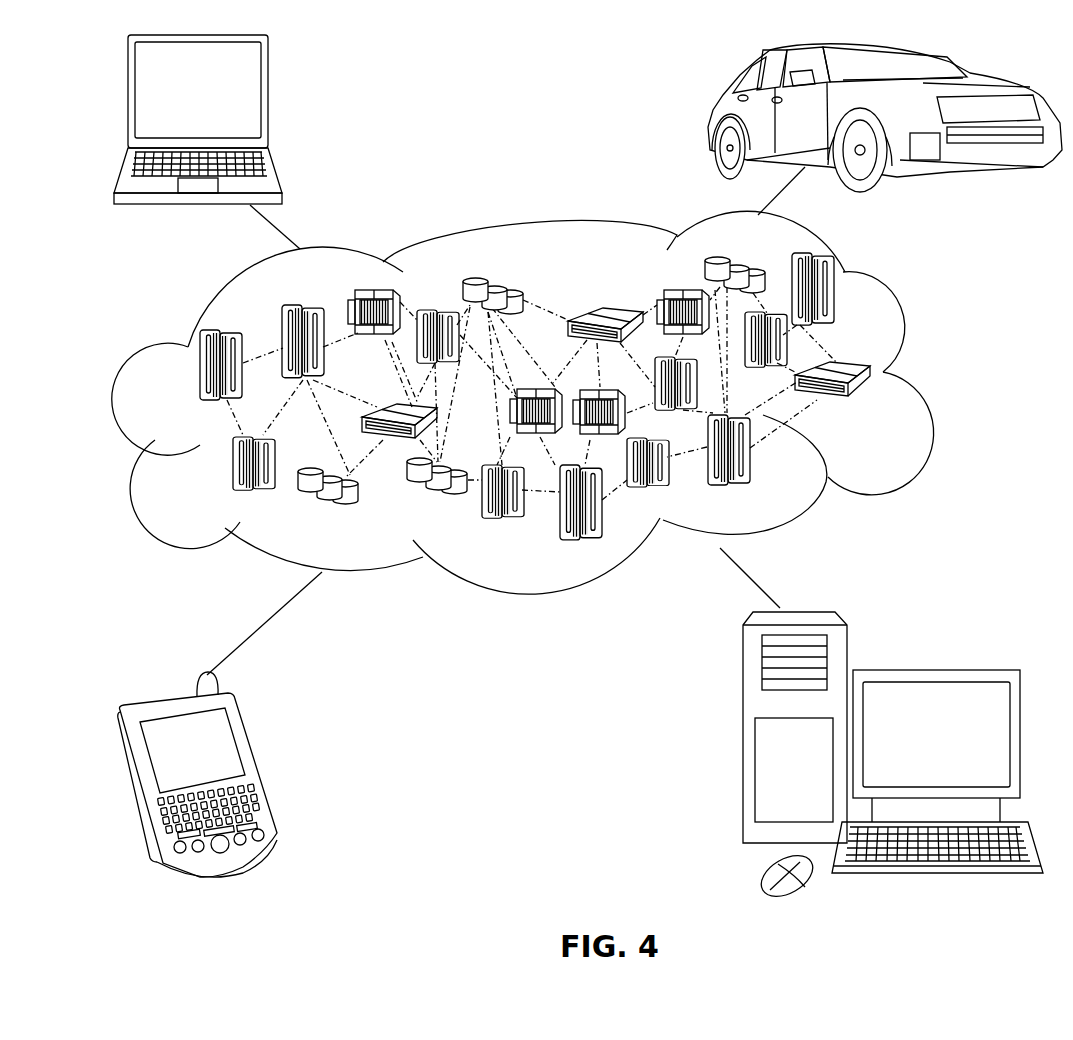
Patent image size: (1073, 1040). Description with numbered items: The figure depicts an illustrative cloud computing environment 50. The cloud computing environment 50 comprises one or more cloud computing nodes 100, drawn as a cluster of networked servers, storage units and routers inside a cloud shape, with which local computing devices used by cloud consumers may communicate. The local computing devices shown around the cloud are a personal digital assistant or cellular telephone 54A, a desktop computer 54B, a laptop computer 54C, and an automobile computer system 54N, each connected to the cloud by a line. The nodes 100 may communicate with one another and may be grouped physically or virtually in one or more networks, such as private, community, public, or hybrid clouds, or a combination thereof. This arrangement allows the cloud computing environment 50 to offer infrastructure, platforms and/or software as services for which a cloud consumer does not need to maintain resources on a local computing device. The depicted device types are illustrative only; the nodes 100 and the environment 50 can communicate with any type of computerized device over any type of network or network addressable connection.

The cloud computing environment 50 is at (933, 373).
The cloud computing nodes 100 is at (877, 408).
The personal digital assistant or cellular telephone 54A is at (255, 763).
The desktop computer 54B is at (930, 672).
The laptop computer 54C is at (270, 100).
The automobile computer system 54N is at (708, 117).